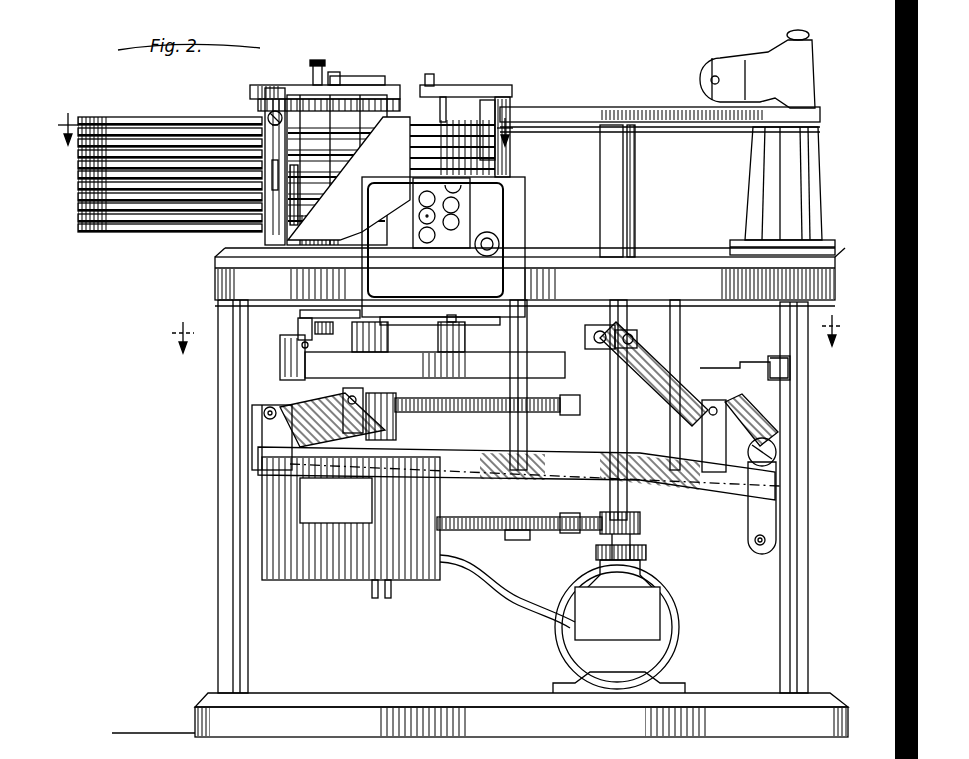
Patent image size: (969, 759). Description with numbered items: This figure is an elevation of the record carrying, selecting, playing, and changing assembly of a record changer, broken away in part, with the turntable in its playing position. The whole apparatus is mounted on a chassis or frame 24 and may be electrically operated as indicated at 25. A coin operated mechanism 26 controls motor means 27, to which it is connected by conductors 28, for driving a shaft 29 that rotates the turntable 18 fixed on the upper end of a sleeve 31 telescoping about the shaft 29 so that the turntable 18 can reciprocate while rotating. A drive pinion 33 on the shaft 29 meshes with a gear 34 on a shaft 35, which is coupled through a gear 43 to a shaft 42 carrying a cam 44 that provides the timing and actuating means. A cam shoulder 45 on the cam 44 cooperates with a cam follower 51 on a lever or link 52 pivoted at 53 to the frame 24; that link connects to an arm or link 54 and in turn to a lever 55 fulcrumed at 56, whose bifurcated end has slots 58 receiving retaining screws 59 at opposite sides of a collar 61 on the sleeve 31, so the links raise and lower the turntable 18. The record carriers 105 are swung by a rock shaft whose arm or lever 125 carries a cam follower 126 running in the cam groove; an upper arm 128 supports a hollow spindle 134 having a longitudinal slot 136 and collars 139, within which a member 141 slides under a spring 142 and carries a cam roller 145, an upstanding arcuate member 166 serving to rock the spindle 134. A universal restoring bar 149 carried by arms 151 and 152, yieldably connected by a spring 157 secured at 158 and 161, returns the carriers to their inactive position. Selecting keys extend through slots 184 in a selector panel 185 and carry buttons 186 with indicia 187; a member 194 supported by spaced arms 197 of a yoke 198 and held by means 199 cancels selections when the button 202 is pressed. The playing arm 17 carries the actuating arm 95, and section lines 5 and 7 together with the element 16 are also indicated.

The section line 5- 5 is at (285, 142).
The section line 7- 7 is at (507, 348).
The knob 16 is at (788, 36).
The playing arm 17 is at (720, 62).
The turntable 18 is at (585, 120).
The chassis or frame 24 is at (216, 281).
The electrical operating means 25 is at (385, 600).
The coin operated mechanism 26 is at (265, 565).
The motor means 27 is at (578, 628).
The conductors 28 is at (500, 600).
The shaft 29 is at (608, 434).
The sleeve 31 is at (634, 230).
The drive pinion 33 is at (642, 525).
The gear 34 is at (562, 530).
The shaft 35 is at (515, 536).
The shaft 42 is at (466, 350).
The gear 43 is at (385, 442).
The cam 44 is at (295, 366).
The cam shoulder 45 is at (350, 384).
The cam follower 51 is at (348, 448).
The lever or link 52 is at (280, 498).
The pivot 53 is at (255, 435).
The arm or link 54 is at (751, 558).
The lever 55 is at (755, 420).
The fulcrum or pivot 56 is at (716, 408).
The slot 58 is at (645, 337).
The retaining screws 59 is at (622, 335).
The collar or enlarged end portion 61 is at (593, 340).
The actuating member or arm 95 is at (722, 365).
The record carriers 105 is at (78, 205).
The arm or lever 125 is at (388, 340).
The cam follower 126 is at (358, 355).
The upper arm 128 is at (348, 92).
The hollow spindle 134 is at (262, 236).
The longitudinal slot 136 is at (270, 172).
The collars 139 is at (272, 100).
The member 141 is at (262, 135).
The spring 142 is at (300, 203).
The cam roller or follower 145 is at (270, 123).
The universal restoring bar 149 is at (333, 75).
The arm 151 is at (342, 80).
The arm 152 is at (300, 325).
The spring 157 is at (380, 295).
The spring securing point 158 is at (315, 66).
The spring securing point 161 is at (315, 330).
The upstanding arcuate member 166 is at (349, 178).
The slots 184 is at (440, 236).
The selector panel 185 is at (380, 262).
The manually operated buttons 186 is at (380, 262).
The indicia 187 is at (440, 248).
The member 194 is at (452, 92).
The spaced arms 197 is at (480, 85).
The vertically arranged yoke 198 is at (505, 112).
The securing means 199 is at (428, 80).
The cancellation button 202 is at (497, 244).